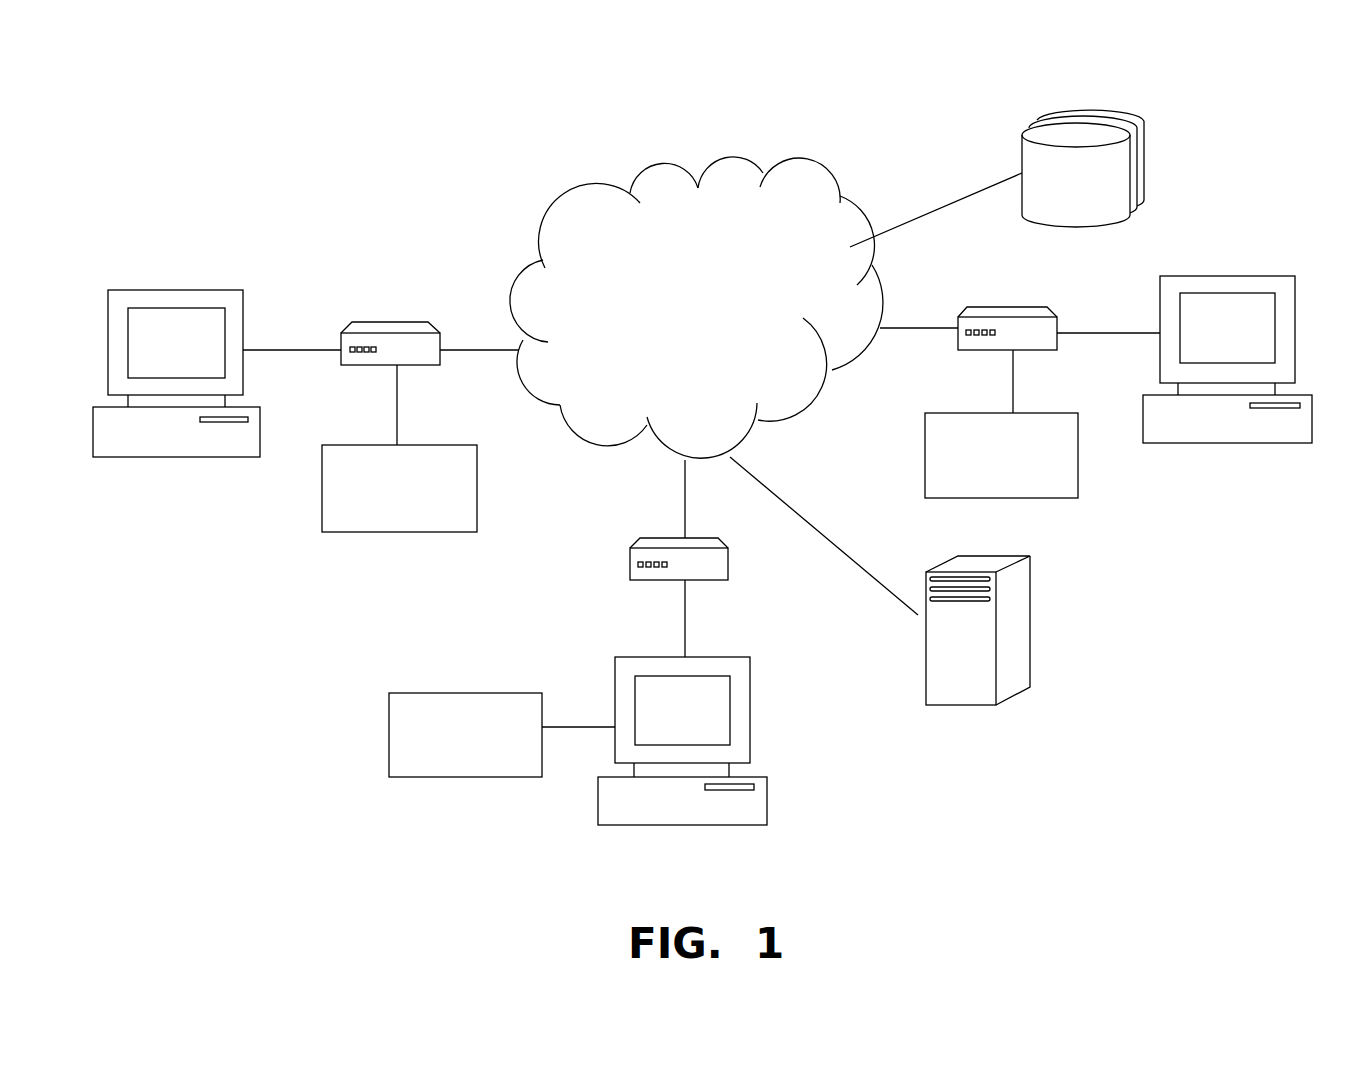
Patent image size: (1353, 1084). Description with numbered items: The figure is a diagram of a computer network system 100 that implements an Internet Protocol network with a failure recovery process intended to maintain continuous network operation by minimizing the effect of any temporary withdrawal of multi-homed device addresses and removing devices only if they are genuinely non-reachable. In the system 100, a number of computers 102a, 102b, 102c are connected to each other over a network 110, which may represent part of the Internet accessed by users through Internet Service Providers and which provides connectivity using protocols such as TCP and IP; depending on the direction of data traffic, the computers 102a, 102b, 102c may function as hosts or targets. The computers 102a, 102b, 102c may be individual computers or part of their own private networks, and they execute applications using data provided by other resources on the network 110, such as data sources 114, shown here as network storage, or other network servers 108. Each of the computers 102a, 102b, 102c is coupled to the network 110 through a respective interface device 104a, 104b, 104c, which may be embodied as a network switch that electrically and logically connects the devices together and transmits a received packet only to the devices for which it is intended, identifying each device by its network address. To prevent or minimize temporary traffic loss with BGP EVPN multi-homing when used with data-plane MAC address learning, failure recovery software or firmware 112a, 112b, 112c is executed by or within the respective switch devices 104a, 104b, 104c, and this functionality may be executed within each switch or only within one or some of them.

The system 100 is at (307, 80).
The computer 102a is at (176, 373).
The computer 102b is at (1227, 359).
The computer 102c is at (682, 741).
The interface device 104a is at (390, 328).
The interface device 104b is at (1007, 316).
The interface device 104c is at (668, 577).
The network server 108 is at (978, 630).
The network 110 is at (696, 307).
The software or firmware 112a is at (399, 488).
The software or firmware 112b is at (1001, 455).
The software or firmware 112c is at (465, 735).
The data source 114 is at (1137, 152).